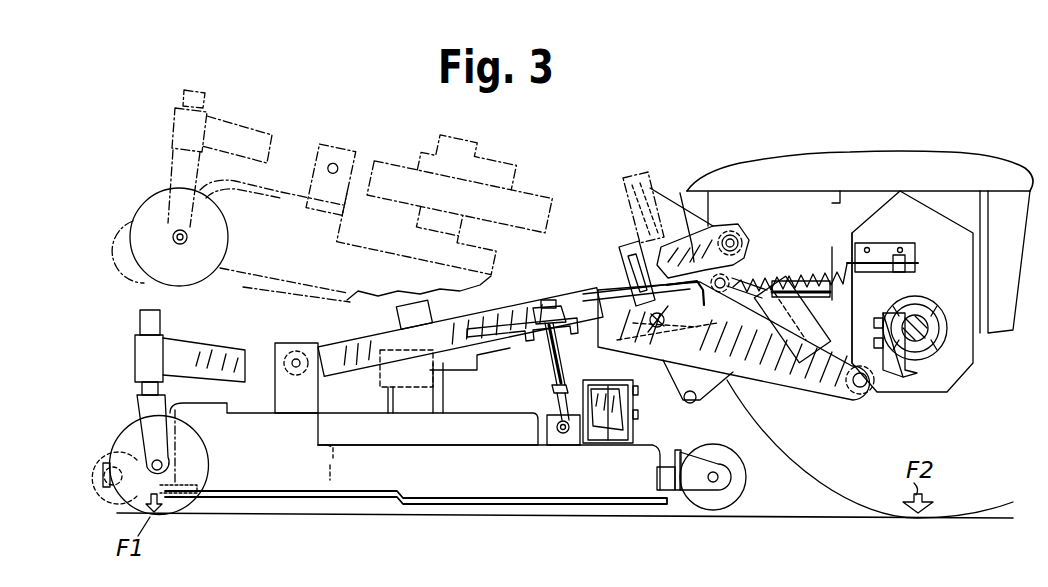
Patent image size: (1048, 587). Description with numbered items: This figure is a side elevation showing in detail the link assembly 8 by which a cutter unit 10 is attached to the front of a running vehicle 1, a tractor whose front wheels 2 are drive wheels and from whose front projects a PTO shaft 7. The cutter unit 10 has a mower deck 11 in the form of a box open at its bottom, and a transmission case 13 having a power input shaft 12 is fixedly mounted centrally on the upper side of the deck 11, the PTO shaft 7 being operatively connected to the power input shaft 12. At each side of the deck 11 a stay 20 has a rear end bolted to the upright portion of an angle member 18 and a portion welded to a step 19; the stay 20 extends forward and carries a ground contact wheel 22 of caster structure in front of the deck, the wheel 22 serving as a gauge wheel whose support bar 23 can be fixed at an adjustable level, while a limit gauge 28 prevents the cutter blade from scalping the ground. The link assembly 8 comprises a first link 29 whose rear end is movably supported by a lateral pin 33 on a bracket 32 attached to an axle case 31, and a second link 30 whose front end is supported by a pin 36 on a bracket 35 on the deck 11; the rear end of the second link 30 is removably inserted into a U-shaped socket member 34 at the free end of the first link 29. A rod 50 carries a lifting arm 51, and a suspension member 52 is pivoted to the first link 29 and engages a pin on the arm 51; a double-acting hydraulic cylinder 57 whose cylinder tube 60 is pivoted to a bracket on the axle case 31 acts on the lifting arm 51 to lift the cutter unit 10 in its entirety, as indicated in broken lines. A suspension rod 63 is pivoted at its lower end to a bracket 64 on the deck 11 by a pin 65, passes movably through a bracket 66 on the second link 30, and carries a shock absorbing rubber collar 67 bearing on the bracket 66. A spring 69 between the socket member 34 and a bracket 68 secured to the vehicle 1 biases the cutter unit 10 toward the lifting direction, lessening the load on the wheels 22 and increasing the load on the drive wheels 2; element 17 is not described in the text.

The running vehicle 1 is at (920, 148).
The front wheels 2 is at (832, 478).
The PTO shaft 7 is at (808, 282).
The link assembly 8 is at (380, 322).
The cutter unit 10 is at (308, 172).
The mower deck 11 is at (446, 500).
The power input shaft 12 is at (497, 355).
The transmission case 13 is at (452, 370).
The base frame 17 is at (488, 455).
The angle member 18 is at (636, 428).
The step 19 is at (613, 378).
The stay 20 is at (222, 364).
The ground contact wheel 22 is at (165, 210).
The support bar 23 is at (140, 322).
The limit gauge 28 is at (93, 484).
The first link 29 is at (790, 372).
The second link 30 is at (485, 328).
The axle case 31 is at (947, 357).
The bracket 32 is at (890, 382).
The lateral pin 33 is at (860, 388).
The socket member 34 is at (618, 303).
The bracket 35 is at (285, 366).
The pin 36 is at (298, 356).
The rod 50 is at (730, 235).
The lifting arm 51 is at (680, 194).
The suspension member 52 is at (622, 246).
The double-acting hydraulic cylinder 57 is at (812, 308).
The cylinder tube 60 is at (775, 335).
The suspension rod 63 is at (553, 392).
The bracket 64 is at (559, 452).
The pin 65 is at (566, 440).
The bracket 66 is at (530, 328).
The shock absorbing rubber collar 67 is at (560, 310).
The bracket 68 is at (905, 255).
The spring 69 is at (738, 280).